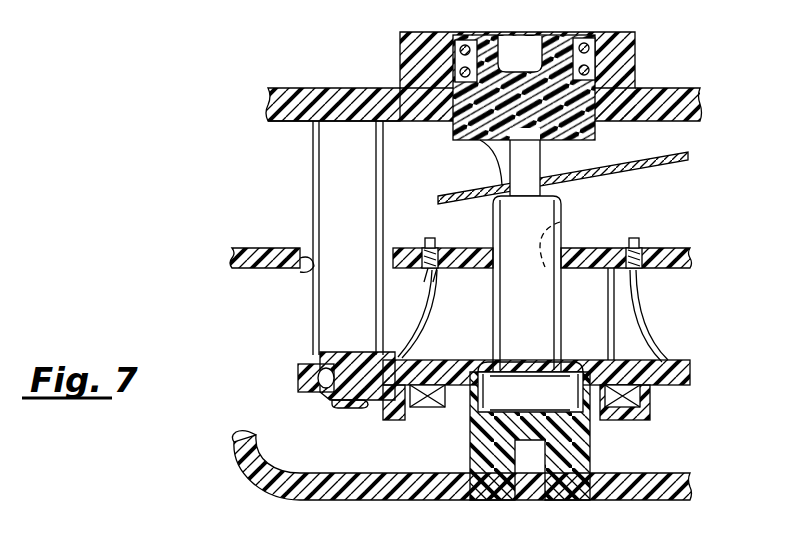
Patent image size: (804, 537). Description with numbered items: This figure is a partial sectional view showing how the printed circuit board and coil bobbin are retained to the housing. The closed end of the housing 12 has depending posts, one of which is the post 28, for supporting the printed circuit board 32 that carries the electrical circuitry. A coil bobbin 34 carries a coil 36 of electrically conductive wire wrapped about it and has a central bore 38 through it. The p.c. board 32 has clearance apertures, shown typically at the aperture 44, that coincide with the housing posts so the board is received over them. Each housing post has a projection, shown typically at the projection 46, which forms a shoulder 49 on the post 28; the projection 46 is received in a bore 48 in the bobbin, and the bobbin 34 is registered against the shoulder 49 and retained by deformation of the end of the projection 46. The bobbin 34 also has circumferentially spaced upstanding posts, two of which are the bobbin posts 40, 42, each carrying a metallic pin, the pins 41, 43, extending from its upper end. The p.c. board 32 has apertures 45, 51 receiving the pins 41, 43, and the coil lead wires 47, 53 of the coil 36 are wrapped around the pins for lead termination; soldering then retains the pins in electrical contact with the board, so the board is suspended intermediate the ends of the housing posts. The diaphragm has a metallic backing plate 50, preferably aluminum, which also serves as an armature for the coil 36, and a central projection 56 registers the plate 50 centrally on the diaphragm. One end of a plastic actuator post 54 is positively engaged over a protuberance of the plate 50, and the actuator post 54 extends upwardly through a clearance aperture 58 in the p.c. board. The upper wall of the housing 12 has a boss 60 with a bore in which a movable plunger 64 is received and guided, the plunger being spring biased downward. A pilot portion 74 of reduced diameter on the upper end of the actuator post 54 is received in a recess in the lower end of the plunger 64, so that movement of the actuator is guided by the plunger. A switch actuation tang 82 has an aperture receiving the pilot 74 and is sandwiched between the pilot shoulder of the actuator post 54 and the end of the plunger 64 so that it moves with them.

The housing 12 is at (268, 105).
The post 28 is at (313, 182).
The printed circuit board 32 is at (264, 248).
The coil bobbin 34 is at (298, 378).
The coil 36 is at (420, 410).
The central bore 38 is at (578, 362).
The bobbin post 40 is at (400, 312).
The pin 41 is at (636, 238).
The bobbin post 42 is at (652, 288).
The pin 43 is at (437, 238).
The clearance aperture 44 is at (312, 264).
The aperture 45 is at (425, 240).
The projection 46 is at (322, 392).
The coil lead wire 47 is at (422, 290).
The bore 48 is at (352, 404).
The shoulder 49 is at (322, 362).
The backing plate 50 is at (340, 472).
The aperture 51 is at (622, 246).
The coil lead wire 53 is at (642, 312).
The actuator post 54 is at (565, 270).
The central projection 56 is at (522, 408).
The clearance aperture 58 is at (556, 220).
The boss 60 is at (400, 56).
The plunger 64 is at (490, 120).
The pilot portion 74 is at (492, 165).
The switch actuation tang 82 is at (648, 160).